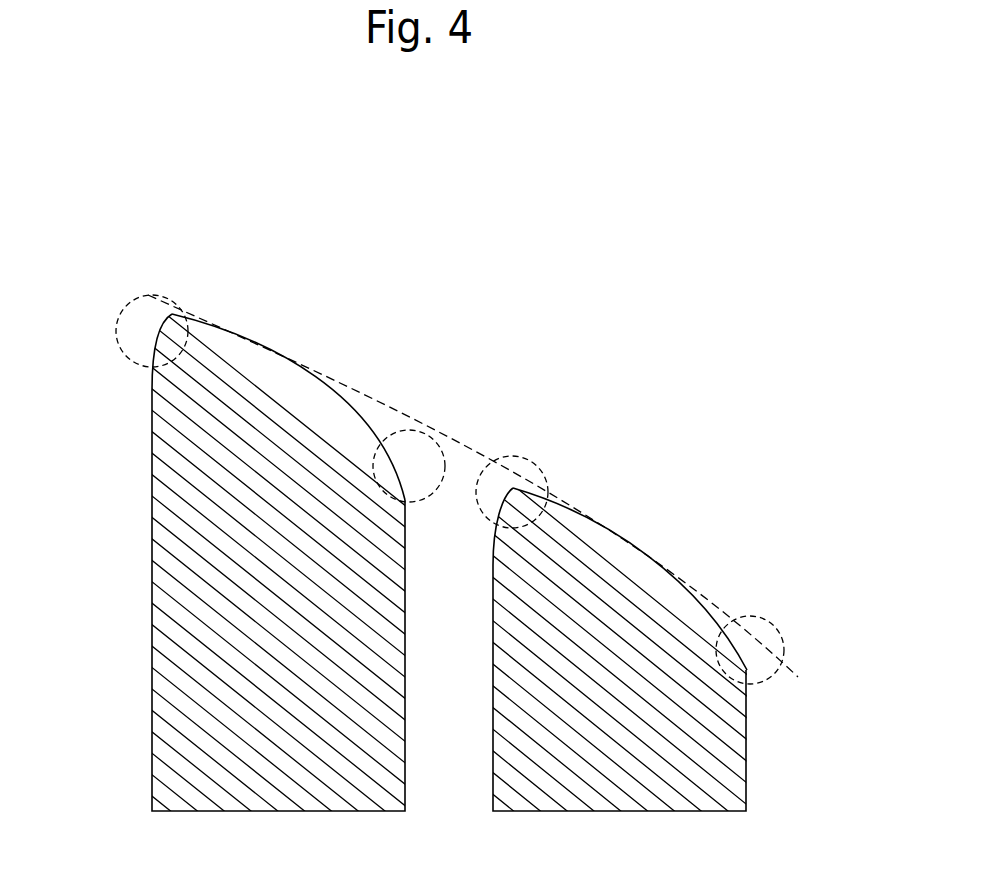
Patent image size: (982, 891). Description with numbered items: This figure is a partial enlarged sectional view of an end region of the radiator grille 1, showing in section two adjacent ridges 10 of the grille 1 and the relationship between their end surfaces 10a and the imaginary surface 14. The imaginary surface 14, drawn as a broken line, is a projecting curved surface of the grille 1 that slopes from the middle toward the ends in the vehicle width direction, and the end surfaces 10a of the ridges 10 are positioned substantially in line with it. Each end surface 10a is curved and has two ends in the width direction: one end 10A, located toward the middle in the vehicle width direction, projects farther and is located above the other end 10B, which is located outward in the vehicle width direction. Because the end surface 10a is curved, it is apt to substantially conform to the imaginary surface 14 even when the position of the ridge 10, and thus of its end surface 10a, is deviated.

The grille 1 is at (469, 584).
The ridge 10 is at (192, 532).
The end surface 10a is at (278, 345).
The one end 10A is at (115, 298).
The other end 10B is at (397, 413).
The imaginary surface 14 is at (177, 305).